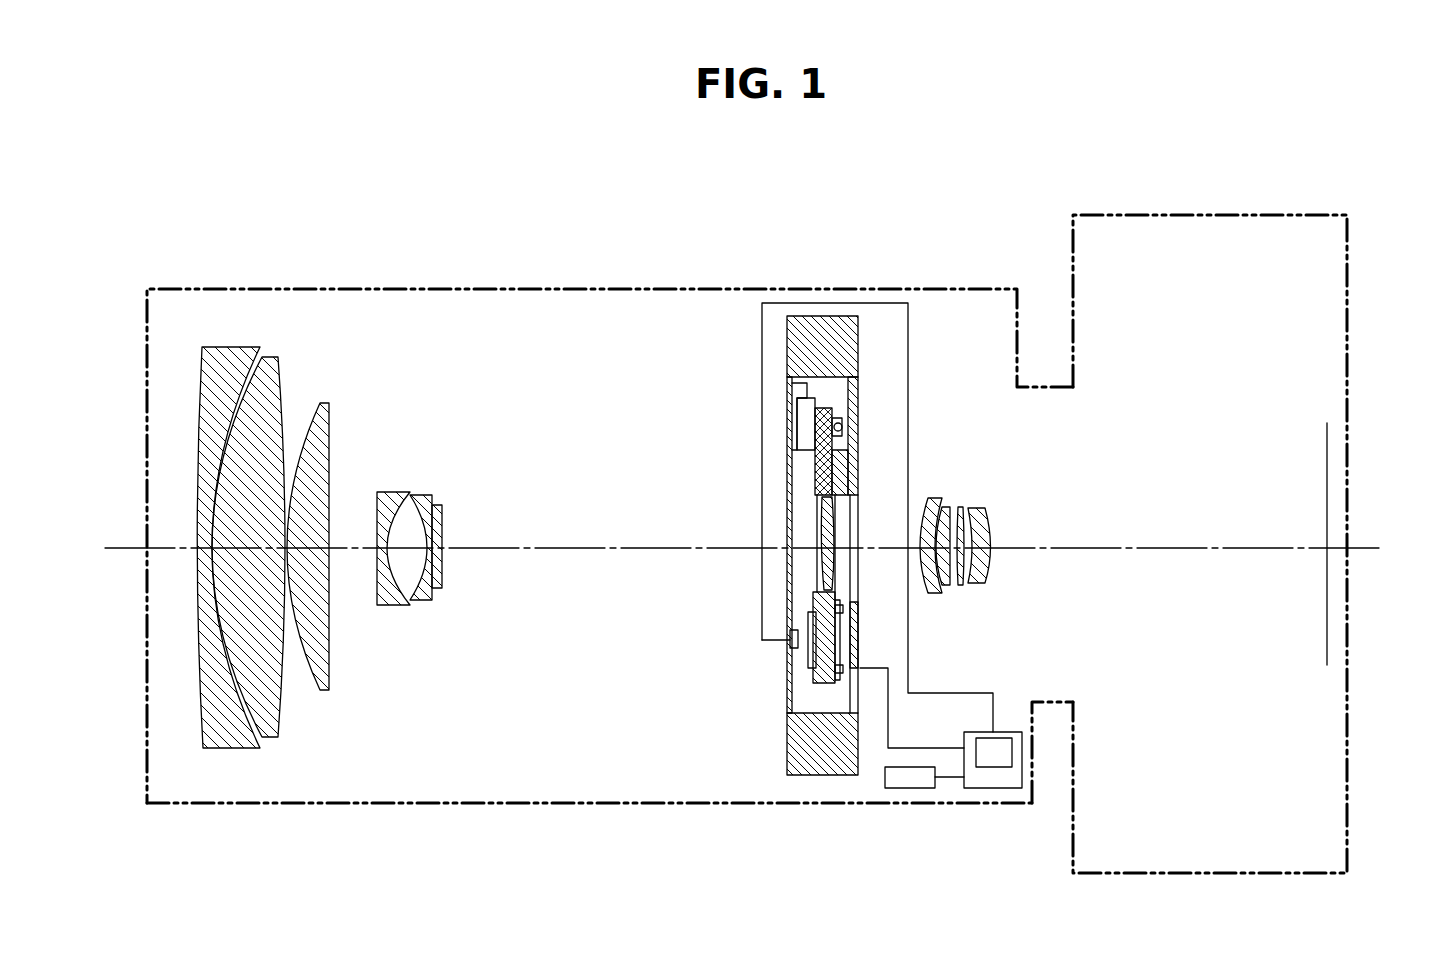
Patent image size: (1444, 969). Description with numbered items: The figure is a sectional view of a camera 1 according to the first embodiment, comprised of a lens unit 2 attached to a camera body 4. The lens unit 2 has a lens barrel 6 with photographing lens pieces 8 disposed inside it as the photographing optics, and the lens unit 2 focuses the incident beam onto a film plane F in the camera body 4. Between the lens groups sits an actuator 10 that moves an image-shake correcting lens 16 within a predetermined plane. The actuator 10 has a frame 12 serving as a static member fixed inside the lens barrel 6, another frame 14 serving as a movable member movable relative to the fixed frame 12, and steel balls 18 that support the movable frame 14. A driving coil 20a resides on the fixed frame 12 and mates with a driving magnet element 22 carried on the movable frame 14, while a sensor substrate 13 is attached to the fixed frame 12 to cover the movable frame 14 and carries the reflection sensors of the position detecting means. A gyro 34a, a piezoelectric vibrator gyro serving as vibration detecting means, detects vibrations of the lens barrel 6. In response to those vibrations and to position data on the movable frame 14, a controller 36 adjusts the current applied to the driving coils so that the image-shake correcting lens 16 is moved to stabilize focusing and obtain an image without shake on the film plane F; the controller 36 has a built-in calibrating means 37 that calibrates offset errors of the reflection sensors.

The camera 1 is at (719, 220).
The lens unit 2 is at (488, 289).
The camera body 4 is at (1205, 215).
The lens barrel 6 is at (510, 792).
The photographing lens pieces 8 is at (432, 503).
The actuator 10 is at (818, 306).
The frame 12 is at (808, 698).
The sensor substrate 13 is at (790, 372).
The frame 14 is at (820, 485).
The image-shake correcting lens 16 is at (822, 540).
The steel balls 18 is at (815, 430).
The driving coil 20a is at (813, 612).
The driving magnet elements 22 is at (790, 640).
The gyro 34a is at (911, 783).
The controller 36 is at (975, 780).
The calibrating means 37 is at (1002, 762).
The film plane F is at (1325, 643).